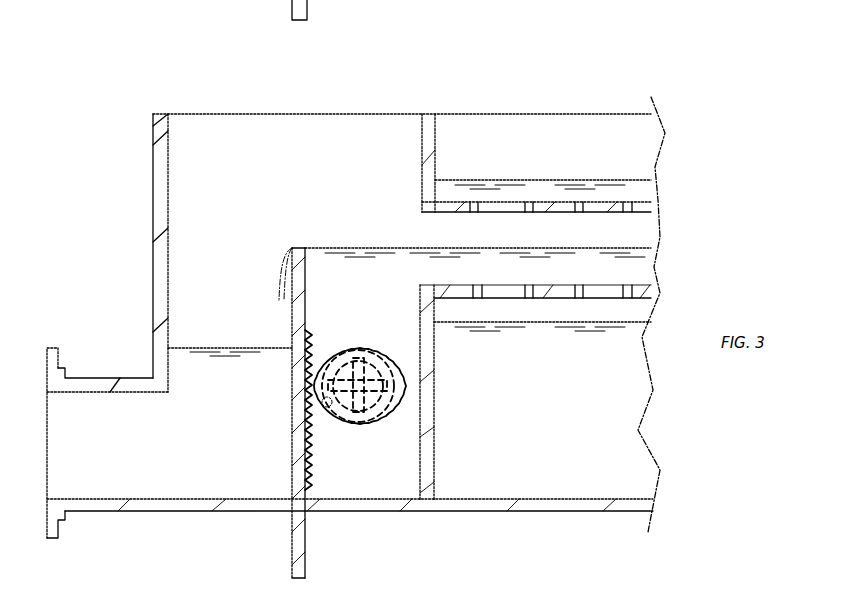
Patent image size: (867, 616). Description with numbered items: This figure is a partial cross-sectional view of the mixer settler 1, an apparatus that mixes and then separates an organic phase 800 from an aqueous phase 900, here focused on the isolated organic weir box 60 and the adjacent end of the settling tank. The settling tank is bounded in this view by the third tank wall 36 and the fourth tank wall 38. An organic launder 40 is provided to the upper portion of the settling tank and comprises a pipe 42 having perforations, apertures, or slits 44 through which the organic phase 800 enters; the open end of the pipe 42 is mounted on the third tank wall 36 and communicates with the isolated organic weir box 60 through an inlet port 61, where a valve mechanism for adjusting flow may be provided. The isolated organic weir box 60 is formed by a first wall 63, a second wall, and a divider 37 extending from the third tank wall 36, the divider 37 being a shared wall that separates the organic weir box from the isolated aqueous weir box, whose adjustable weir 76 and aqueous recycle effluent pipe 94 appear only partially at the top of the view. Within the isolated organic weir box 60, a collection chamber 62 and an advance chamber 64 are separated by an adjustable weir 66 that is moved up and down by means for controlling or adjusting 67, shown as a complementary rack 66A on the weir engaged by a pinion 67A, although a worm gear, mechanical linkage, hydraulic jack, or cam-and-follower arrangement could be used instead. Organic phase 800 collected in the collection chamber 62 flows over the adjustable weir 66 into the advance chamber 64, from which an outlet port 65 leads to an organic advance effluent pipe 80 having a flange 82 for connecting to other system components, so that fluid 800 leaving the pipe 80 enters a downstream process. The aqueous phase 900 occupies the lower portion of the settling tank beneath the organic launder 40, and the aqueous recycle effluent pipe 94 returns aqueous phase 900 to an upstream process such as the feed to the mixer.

The mixer settler 1 is at (690, 62).
The third tank wall 36 is at (438, 160).
The divider 37 is at (262, 113).
The fourth tank wall 38 is at (502, 113).
The organic launder 40 is at (507, 298).
The pipe 42 is at (603, 294).
The perforations, apertures, or slits 44 is at (624, 210).
The isolated organic weir box 60 is at (140, 152).
The inlet port 61 is at (426, 225).
The collection chamber 62 is at (478, 270).
The first wall 63 is at (158, 218).
The advance chamber 64 is at (230, 314).
The outlet port 65 is at (168, 470).
The adjustable weir 66 is at (296, 549).
The rack 66A is at (310, 464).
The means for controlling or adjusting 67 is at (360, 368).
The pinion 67A is at (336, 348).
The adjustable weir 76 is at (284, 10).
The organic advance effluent pipe 80 is at (116, 378).
The flange 82 is at (48, 346).
The organic phase 800 is at (608, 97).
The aqueous phase 900 is at (542, 374).
The aqueous recycle effluent pipe 94 is at (331, 8).